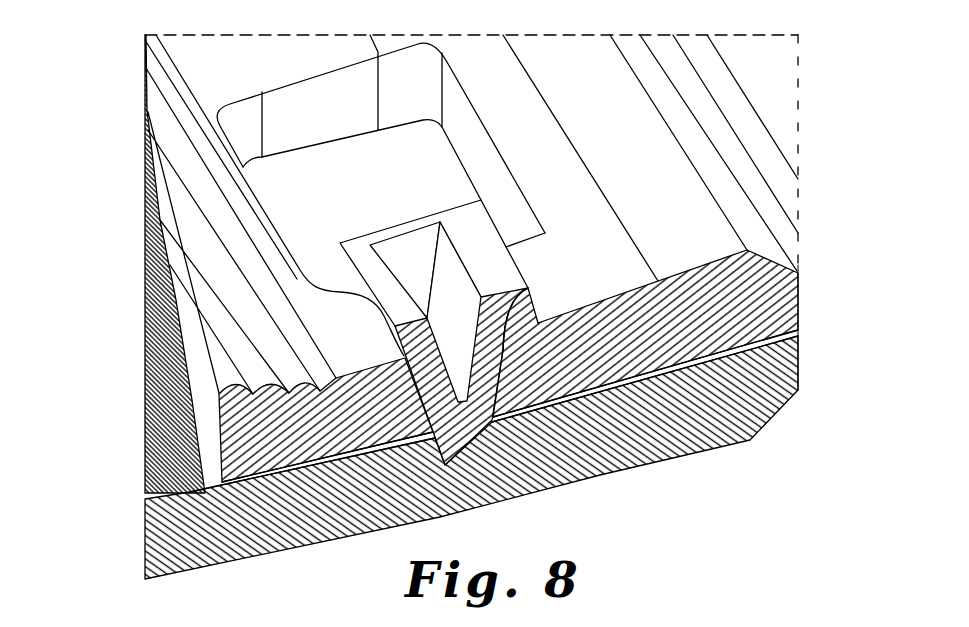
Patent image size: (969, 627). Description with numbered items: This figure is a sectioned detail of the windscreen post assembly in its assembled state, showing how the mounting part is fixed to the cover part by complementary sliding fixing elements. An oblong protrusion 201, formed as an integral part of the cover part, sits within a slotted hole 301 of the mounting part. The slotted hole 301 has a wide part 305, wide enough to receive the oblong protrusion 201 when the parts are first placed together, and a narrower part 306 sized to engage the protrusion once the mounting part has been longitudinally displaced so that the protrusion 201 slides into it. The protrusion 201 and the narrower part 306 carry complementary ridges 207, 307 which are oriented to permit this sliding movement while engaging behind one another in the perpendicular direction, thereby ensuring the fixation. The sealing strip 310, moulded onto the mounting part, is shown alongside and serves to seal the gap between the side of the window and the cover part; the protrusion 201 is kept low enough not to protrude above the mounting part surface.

The oblong protrusion 201 is at (494, 379).
The ridge 207 is at (399, 354).
The slotted hole 301 is at (303, 182).
The wide part 305 is at (318, 218).
The narrower part 306 is at (603, 477).
The ridge 307 is at (393, 452).
The sealing strip 310 is at (750, 298).